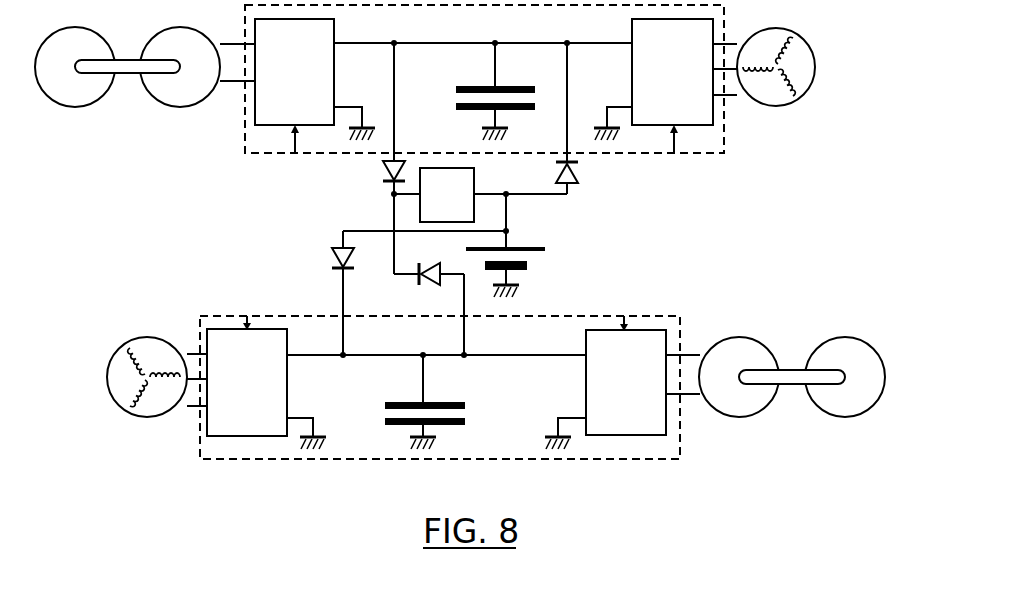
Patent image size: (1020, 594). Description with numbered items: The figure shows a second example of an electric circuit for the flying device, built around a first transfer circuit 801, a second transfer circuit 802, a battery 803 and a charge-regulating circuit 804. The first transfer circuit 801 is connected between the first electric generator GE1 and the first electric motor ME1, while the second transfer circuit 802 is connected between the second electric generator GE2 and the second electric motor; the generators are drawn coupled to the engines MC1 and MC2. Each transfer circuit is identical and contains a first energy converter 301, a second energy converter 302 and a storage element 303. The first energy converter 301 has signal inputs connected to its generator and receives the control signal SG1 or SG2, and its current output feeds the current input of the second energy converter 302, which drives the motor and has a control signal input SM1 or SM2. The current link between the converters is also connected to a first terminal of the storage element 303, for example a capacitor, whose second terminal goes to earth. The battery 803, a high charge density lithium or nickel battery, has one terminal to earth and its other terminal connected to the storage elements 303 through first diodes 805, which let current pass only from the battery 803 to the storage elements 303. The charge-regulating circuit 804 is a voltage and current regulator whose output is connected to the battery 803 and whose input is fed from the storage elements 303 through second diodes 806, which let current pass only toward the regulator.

The first energy converter 301 is at (334, 72).
The second energy converter 302 is at (632, 62).
The storage element 303 is at (462, 87).
The first transfer circuit 801 is at (724, 145).
The second transfer circuit 802 is at (680, 318).
The battery 803 is at (528, 265).
The charge-regulating circuit 804 is at (476, 182).
The first diodes 805 is at (579, 172).
The second diodes 806 is at (382, 170).
The combustion engine 1 MC1 is at (62, 107).
The first electric generator GE1 is at (160, 105).
The first electric motor ME1 is at (806, 90).
The control signal SG1 is at (293, 154).
The control signal input SM1 is at (673, 154).
The control signal SG2 is at (245, 310).
The control signal input SM2 is at (623, 311).
The second electric generator GE2 is at (728, 337).
The combustion engine 2 MC2 is at (820, 338).